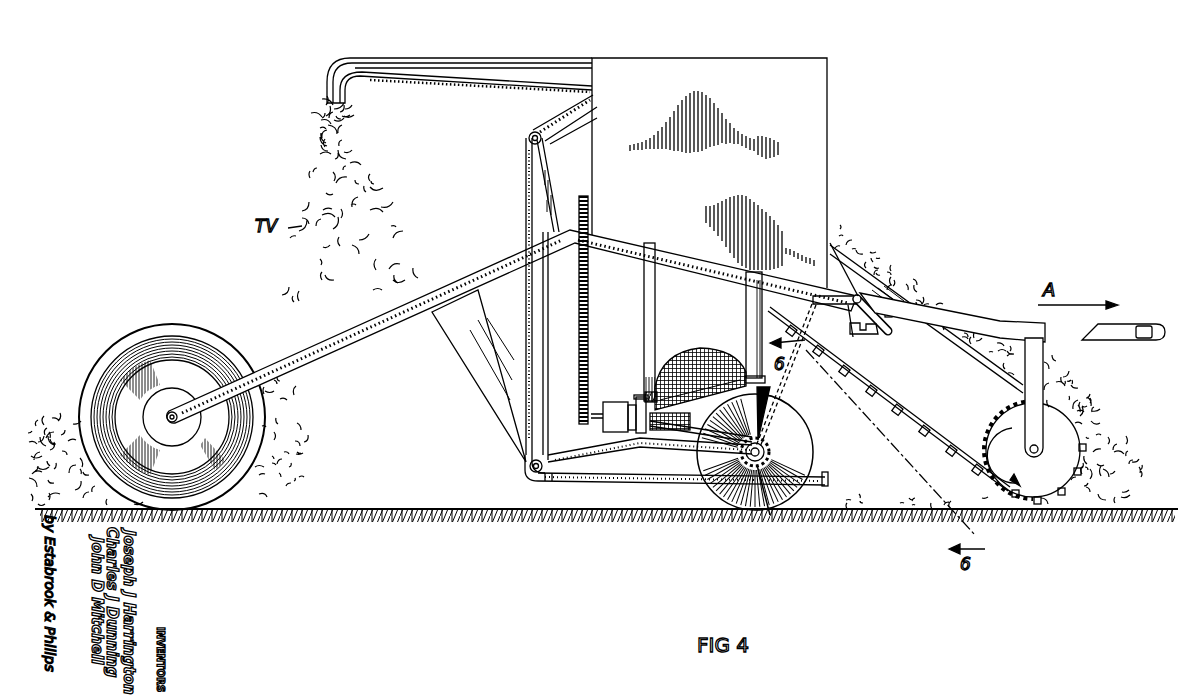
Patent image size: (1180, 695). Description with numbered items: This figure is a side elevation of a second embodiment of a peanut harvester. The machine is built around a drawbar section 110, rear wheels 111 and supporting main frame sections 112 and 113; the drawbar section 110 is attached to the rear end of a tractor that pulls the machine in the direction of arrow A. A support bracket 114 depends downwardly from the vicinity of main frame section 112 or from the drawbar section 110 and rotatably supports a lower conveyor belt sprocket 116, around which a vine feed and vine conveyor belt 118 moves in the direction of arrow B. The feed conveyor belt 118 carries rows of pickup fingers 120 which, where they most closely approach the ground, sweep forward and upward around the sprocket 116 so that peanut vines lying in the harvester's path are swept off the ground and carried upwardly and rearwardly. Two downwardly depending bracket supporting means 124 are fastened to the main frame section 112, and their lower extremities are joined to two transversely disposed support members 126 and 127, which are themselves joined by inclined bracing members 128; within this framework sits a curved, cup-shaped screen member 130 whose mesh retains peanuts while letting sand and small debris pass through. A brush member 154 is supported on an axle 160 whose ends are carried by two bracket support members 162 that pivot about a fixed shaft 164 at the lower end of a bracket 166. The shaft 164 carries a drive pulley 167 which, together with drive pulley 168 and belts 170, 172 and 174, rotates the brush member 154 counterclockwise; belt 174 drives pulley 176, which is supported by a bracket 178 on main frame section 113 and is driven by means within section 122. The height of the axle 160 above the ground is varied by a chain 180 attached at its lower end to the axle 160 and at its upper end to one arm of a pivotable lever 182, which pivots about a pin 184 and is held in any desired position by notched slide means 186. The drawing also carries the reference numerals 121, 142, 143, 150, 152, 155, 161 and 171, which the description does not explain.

The drawbar section 110 is at (1052, 338).
The rear wheels 111 is at (133, 337).
The supporting main frame section 112 is at (990, 316).
The main frame section 113 is at (412, 297).
The support bracket 114 is at (1028, 384).
The lower conveyor belt sprocket 116 is at (1068, 447).
The vine feed and vine conveyor belt 118 is at (875, 298).
The pickup fingers 120 is at (927, 442).
The discharge chute 121 is at (527, 57).
The section 122 is at (770, 93).
The bracket supporting means 124 is at (644, 307).
The transversely disposed support member 126 is at (648, 394).
The transversely disposed support member 127 is at (766, 410).
The inclined bracing members 128 is at (683, 356).
The curved or cup-shaped screen member 130 is at (710, 358).
The frame bar 142 is at (685, 427).
The mounting plate 143 is at (636, 400).
The brush shaft 150 is at (767, 450).
The rotary brush 152 is at (809, 428).
The brush member 154 is at (712, 515).
The motor 155 is at (604, 421).
The axle 160 is at (766, 459).
The guide bar 161 is at (588, 345).
The bracket support members 162 is at (660, 472).
The fixed shaft 164 is at (522, 473).
The bracket 166 is at (490, 392).
The drive pulley 167 is at (550, 482).
The drive pulley 168 is at (773, 516).
The belt 170 is at (620, 455).
The bracket 171 is at (833, 477).
The belt 172 is at (525, 228).
The belt 174 is at (563, 110).
The pulley 176 is at (528, 140).
The bracket 178 is at (540, 185).
The chain 180 is at (806, 371).
The pivotable lever 182 is at (850, 312).
The pin 184 is at (862, 296).
The notched slide means 186 is at (892, 317).